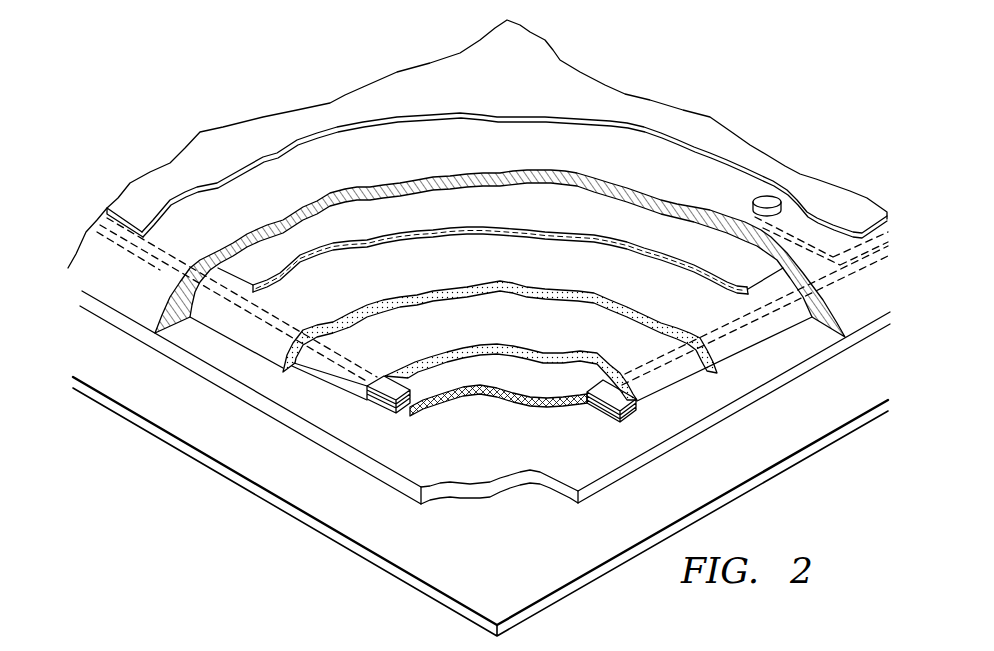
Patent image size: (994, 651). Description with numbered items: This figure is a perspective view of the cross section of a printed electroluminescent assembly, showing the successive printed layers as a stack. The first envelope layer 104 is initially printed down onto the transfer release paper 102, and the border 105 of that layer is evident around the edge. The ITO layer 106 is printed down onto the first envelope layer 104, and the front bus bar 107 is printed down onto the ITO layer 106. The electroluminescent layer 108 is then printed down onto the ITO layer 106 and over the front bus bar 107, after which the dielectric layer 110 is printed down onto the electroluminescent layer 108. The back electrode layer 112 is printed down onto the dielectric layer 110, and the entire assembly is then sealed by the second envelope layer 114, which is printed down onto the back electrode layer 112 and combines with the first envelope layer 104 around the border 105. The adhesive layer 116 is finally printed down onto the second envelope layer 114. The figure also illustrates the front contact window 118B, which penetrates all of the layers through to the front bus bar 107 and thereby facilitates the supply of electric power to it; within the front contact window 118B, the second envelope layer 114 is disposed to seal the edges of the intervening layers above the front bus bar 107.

The transfer release paper 102 is at (517, 558).
The first envelope layer 104 is at (463, 453).
The border 105 is at (227, 355).
The ITO layer 106 is at (524, 380).
The front bus bar 107 is at (603, 393).
The electroluminescent layer 108 is at (602, 333).
The dielectric layer 110 is at (457, 277).
The back electrode layer 112 is at (564, 221).
The second envelope layer 114 is at (436, 163).
The adhesive layer 116 is at (535, 85).
The front contact window 118B is at (773, 196).